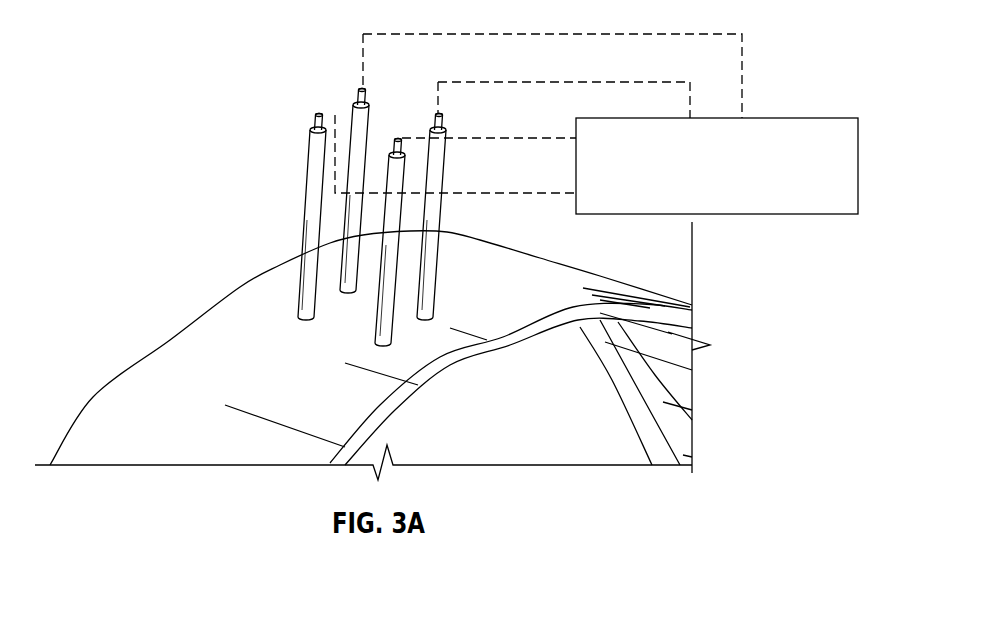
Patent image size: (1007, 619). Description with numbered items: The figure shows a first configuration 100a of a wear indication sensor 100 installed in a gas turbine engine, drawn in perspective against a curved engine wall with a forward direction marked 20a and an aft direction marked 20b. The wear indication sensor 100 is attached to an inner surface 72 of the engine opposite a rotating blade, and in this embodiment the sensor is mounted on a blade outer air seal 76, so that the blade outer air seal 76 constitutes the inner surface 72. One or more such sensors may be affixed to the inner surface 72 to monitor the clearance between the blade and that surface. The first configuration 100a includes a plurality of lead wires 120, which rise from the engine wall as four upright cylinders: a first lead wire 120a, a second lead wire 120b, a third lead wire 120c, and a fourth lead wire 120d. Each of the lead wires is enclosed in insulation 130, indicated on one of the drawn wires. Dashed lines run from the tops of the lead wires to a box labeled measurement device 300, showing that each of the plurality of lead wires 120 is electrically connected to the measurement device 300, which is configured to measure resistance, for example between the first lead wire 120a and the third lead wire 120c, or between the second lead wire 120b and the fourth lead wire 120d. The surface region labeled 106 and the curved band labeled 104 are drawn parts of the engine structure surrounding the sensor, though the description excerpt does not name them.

The wear indication sensor 100 is at (115, 80).
The first configuration 100a is at (155, 149).
The plurality of lead wires 120 is at (240, 140).
The first lead wire 120a is at (358, 96).
The second lead wire 120b is at (443, 125).
The third lead wire 120c is at (316, 122).
The fourth lead wire 120d is at (398, 138).
The insulation 130 is at (437, 178).
The measurement device 300 is at (797, 118).
The nacelle surface 106 is at (179, 348).
The fan blade 104 is at (598, 380).
The blade outer air seal 76 is at (583, 289).
The inner surface 72 is at (693, 313).
The forward direction 20a is at (492, 366).
The aft direction 20b is at (178, 254).